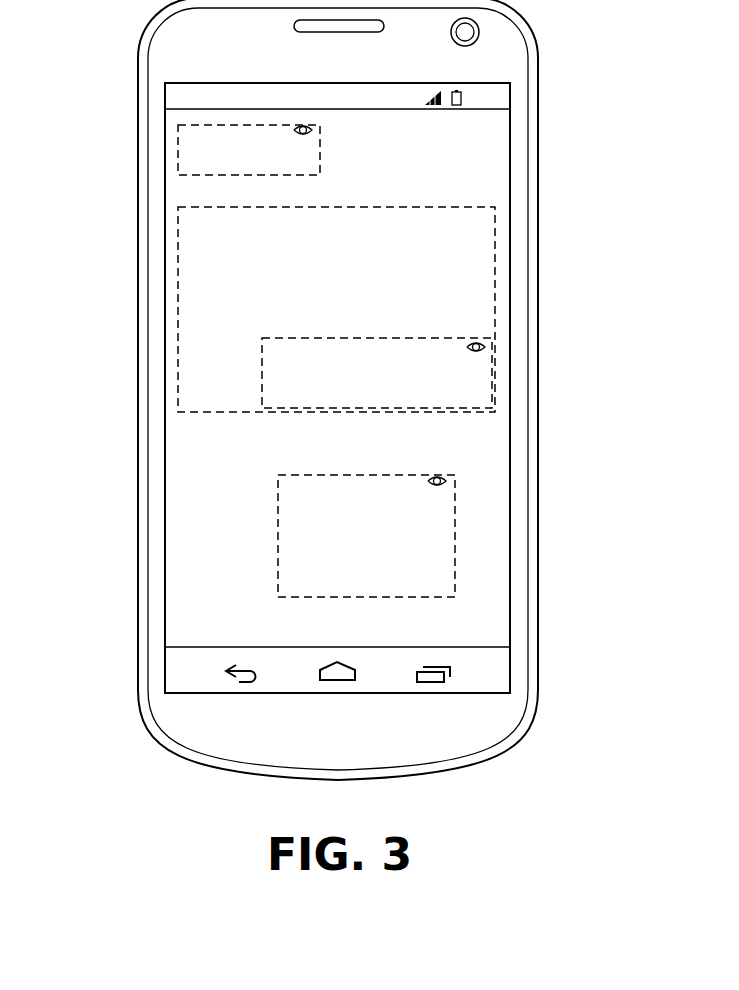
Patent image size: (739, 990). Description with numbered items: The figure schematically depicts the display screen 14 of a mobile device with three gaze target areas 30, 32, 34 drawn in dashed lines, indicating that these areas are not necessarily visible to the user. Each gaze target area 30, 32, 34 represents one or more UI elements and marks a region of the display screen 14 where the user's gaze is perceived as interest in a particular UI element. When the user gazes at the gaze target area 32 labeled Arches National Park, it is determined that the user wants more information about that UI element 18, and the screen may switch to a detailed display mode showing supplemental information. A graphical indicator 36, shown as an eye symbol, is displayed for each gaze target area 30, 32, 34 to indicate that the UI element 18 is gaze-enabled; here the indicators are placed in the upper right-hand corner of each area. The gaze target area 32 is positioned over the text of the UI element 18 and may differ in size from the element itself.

The display screen 14 is at (510, 167).
The UI element 18 is at (178, 303).
The gaze target area 30 is at (178, 150).
The gaze target area 32 is at (363, 338).
The gaze target area 34 is at (278, 564).
The graphical indicator 36 is at (308, 129).